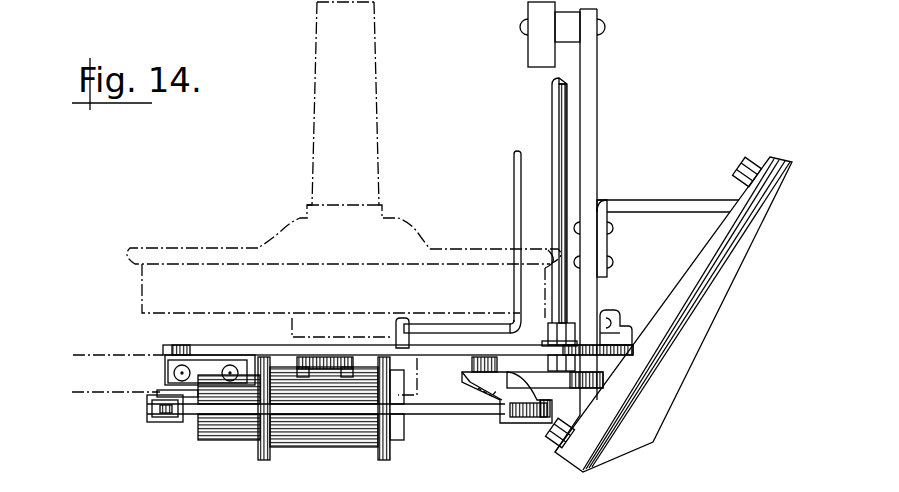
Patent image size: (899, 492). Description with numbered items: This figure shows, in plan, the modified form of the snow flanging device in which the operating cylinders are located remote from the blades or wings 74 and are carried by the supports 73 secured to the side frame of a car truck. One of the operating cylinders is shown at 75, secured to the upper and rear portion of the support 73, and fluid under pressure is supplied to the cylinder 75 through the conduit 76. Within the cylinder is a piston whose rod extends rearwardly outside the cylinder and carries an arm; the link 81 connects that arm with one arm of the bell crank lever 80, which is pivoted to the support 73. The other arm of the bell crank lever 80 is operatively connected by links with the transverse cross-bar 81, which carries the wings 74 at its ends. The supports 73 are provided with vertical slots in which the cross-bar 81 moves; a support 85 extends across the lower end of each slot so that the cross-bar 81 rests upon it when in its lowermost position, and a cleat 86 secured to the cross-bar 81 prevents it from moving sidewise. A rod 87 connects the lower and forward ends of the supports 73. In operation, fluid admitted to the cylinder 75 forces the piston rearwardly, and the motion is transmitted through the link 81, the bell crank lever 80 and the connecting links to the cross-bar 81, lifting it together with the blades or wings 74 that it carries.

The support 73 is at (444, 352).
The wing or blade 74 is at (668, 314).
The operating cylinder 75 is at (350, 443).
The conduit 76 is at (515, 297).
The bell crank lever 80 is at (503, 399).
The link / transverse cross-bar 81 is at (597, 186).
The support 85 is at (541, 341).
The cleat 86 is at (628, 339).
The rod 87 is at (553, 126).